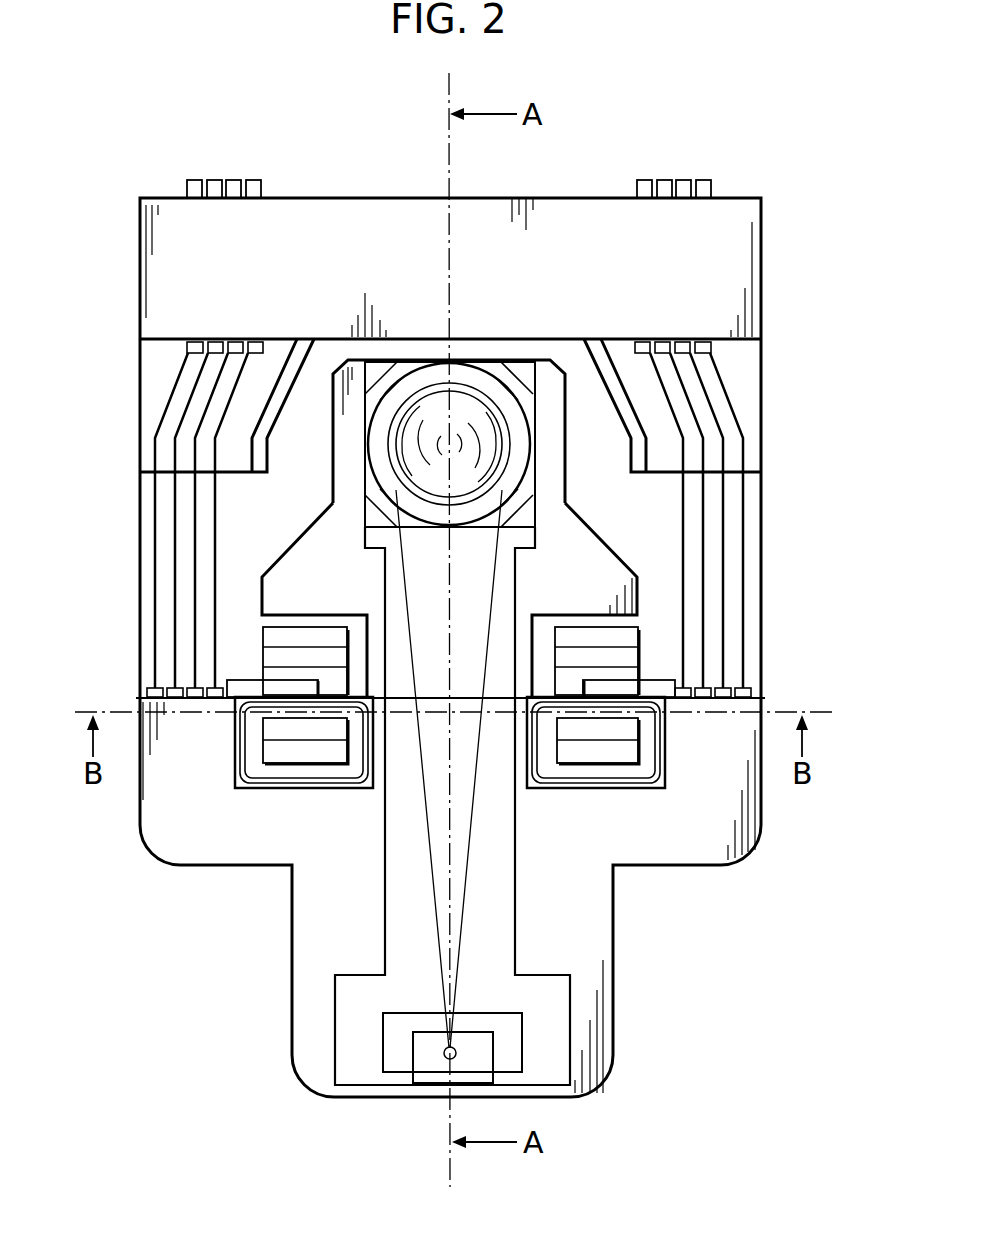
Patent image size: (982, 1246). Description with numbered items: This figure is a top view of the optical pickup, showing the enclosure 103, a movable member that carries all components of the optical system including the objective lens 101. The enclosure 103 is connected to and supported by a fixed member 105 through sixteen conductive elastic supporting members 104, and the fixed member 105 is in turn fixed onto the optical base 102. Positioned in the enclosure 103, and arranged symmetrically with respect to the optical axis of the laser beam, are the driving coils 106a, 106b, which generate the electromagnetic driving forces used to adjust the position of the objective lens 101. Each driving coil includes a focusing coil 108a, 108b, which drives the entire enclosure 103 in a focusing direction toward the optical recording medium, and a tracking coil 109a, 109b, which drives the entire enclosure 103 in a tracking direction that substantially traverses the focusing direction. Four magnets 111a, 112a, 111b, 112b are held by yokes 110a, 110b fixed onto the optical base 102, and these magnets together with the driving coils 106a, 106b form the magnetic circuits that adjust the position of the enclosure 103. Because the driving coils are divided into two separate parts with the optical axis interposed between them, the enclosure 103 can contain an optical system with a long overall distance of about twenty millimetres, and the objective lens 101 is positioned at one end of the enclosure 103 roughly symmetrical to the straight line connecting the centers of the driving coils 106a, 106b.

The objective lens 101 is at (467, 412).
The optical base 102 is at (763, 642).
The enclosure 103 is at (767, 797).
The elastic supporting members 104 is at (145, 562).
The fixed member 105 is at (762, 267).
The driving coil 106a is at (675, 739).
The driving coil 106b is at (253, 731).
The focusing coil 108a is at (667, 757).
The focusing coil 108b is at (238, 700).
The tracking coil 109a is at (665, 690).
The tracking coil 109b is at (238, 697).
The yoke 110a is at (593, 627).
The yoke 110b is at (293, 624).
The magnet 111a is at (600, 784).
The magnet 111b is at (263, 727).
The magnet 112a is at (643, 652).
The magnet 112b is at (262, 657).